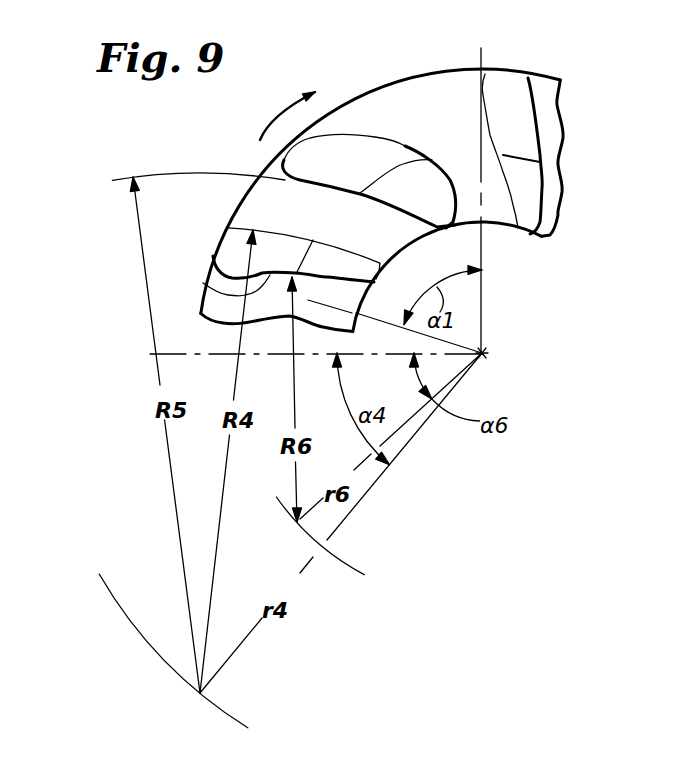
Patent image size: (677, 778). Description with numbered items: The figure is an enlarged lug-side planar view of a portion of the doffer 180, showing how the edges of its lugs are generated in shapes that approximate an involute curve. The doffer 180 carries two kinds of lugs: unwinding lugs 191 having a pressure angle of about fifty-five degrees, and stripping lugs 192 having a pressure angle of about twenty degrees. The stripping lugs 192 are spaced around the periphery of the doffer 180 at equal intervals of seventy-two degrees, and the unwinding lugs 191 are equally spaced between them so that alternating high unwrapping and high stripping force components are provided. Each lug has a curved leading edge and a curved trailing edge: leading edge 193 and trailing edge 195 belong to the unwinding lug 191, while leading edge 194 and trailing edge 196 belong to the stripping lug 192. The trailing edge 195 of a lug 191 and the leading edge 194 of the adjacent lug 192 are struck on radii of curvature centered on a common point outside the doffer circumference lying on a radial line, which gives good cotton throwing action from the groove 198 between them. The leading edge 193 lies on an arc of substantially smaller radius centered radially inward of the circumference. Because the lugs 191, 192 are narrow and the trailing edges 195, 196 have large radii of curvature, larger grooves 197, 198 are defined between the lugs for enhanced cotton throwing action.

The doffer 180 is at (436, 74).
The unwinding lug 191 is at (377, 152).
The stripping lug 192 is at (515, 88).
The leading edge 193 is at (355, 137).
The leading edge 194 is at (294, 228).
The trailing edge 195 is at (303, 183).
The trailing edge 196 is at (203, 286).
The groove 197 is at (506, 211).
The groove 198 is at (387, 225).